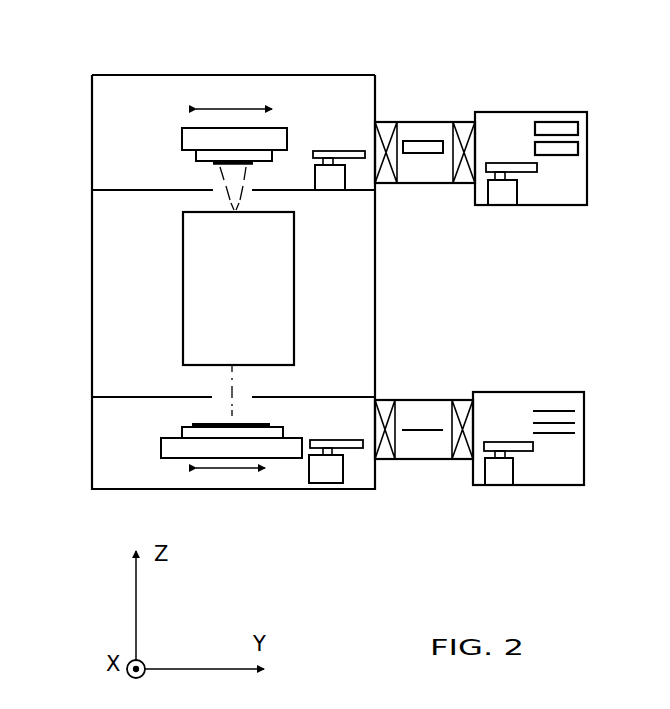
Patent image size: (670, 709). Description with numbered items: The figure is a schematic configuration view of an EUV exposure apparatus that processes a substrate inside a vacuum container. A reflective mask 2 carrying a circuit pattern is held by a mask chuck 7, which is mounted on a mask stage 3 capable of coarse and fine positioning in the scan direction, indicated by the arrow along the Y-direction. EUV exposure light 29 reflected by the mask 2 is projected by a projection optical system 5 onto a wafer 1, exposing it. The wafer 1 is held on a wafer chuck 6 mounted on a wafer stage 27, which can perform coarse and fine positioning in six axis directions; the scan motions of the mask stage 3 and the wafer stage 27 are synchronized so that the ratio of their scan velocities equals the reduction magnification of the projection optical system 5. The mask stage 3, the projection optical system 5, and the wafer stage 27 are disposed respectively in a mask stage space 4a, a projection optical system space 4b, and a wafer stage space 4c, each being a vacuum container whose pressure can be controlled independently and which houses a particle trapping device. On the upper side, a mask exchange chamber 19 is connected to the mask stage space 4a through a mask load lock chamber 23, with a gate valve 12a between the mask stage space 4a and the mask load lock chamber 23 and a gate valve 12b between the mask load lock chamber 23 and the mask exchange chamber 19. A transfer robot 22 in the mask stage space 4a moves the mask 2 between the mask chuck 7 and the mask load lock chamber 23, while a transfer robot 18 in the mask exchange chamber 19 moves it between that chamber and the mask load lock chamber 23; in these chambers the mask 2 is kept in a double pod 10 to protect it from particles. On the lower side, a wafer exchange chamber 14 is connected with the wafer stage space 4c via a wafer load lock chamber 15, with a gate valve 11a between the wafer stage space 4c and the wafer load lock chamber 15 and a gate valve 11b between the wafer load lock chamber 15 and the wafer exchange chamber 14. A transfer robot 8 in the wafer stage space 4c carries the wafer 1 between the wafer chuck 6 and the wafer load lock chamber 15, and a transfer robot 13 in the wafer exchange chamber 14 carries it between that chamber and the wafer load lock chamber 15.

The wafer 1 is at (418, 430).
The reflective mask 2 is at (214, 165).
The mask stage 3 is at (200, 134).
The mask stage space 4a is at (104, 90).
The projection optical system space 4b is at (107, 222).
The wafer stage space 4c is at (101, 461).
The projection optical system 5 is at (275, 304).
The wafer chuck 6 is at (192, 428).
The mask chuck 7 is at (196, 157).
The transfer robot 8 is at (330, 466).
The double pod 10 is at (431, 141).
The gate valve 11a is at (383, 399).
The gate valve 11b is at (463, 399).
The gate valve 12a is at (396, 121).
The gate valve 12b is at (470, 121).
The transfer robot 13 is at (498, 470).
The wafer exchange chamber 14 is at (572, 486).
The wafer load lock chamber 15 is at (420, 460).
The transfer robot 18 is at (503, 196).
The mask exchange chamber 19 is at (575, 206).
The transfer robot 22 is at (330, 175).
The mask load lock chamber 23 is at (425, 184).
The wafer stage 27 is at (176, 445).
The EUV exposure light 29 is at (230, 203).